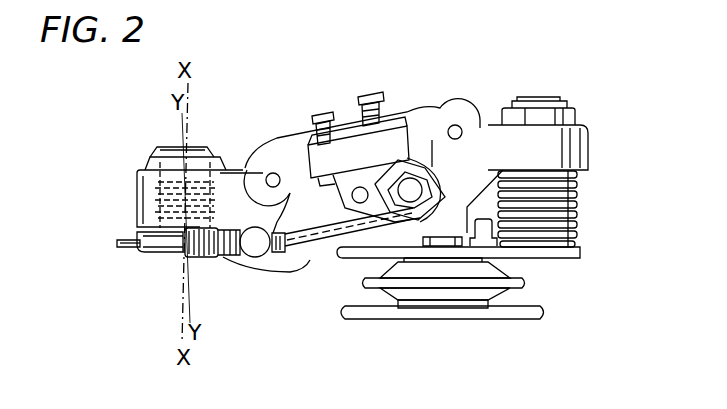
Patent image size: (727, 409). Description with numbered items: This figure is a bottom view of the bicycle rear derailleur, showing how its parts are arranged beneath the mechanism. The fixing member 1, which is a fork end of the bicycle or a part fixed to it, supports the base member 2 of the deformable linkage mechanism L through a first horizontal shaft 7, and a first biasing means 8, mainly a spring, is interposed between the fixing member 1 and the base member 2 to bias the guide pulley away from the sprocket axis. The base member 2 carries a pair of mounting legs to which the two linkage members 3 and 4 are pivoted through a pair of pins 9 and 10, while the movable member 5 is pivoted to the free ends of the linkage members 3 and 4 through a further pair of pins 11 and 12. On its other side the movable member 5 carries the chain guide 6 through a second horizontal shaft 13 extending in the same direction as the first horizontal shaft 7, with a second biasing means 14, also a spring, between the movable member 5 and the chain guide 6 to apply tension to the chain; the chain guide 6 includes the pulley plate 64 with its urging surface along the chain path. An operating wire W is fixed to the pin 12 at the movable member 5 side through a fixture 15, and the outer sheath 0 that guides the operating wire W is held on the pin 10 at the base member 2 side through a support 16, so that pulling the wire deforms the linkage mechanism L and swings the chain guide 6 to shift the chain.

The outer sheath 0 is at (162, 250).
The fixing member 1 is at (137, 237).
The base member 2 is at (137, 196).
The linkage member 3 is at (355, 128).
The linkage member 4 is at (327, 245).
The movable member 5 is at (590, 140).
The chain guide 6 is at (476, 320).
The first horizontal shaft 7 is at (165, 148).
The first biasing means 8 is at (157, 186).
The pin 9 is at (272, 176).
The pin 10 is at (254, 252).
The pin 11 is at (456, 126).
The pin 12 is at (410, 196).
The second horizontal shaft 13 is at (540, 97).
The second biasing means 14 is at (580, 195).
The fixture 15 is at (410, 168).
The support 16 is at (205, 258).
The pulley plate 64 is at (555, 255).
The linkage mechanism L is at (296, 133).
The operating wire W is at (298, 262).